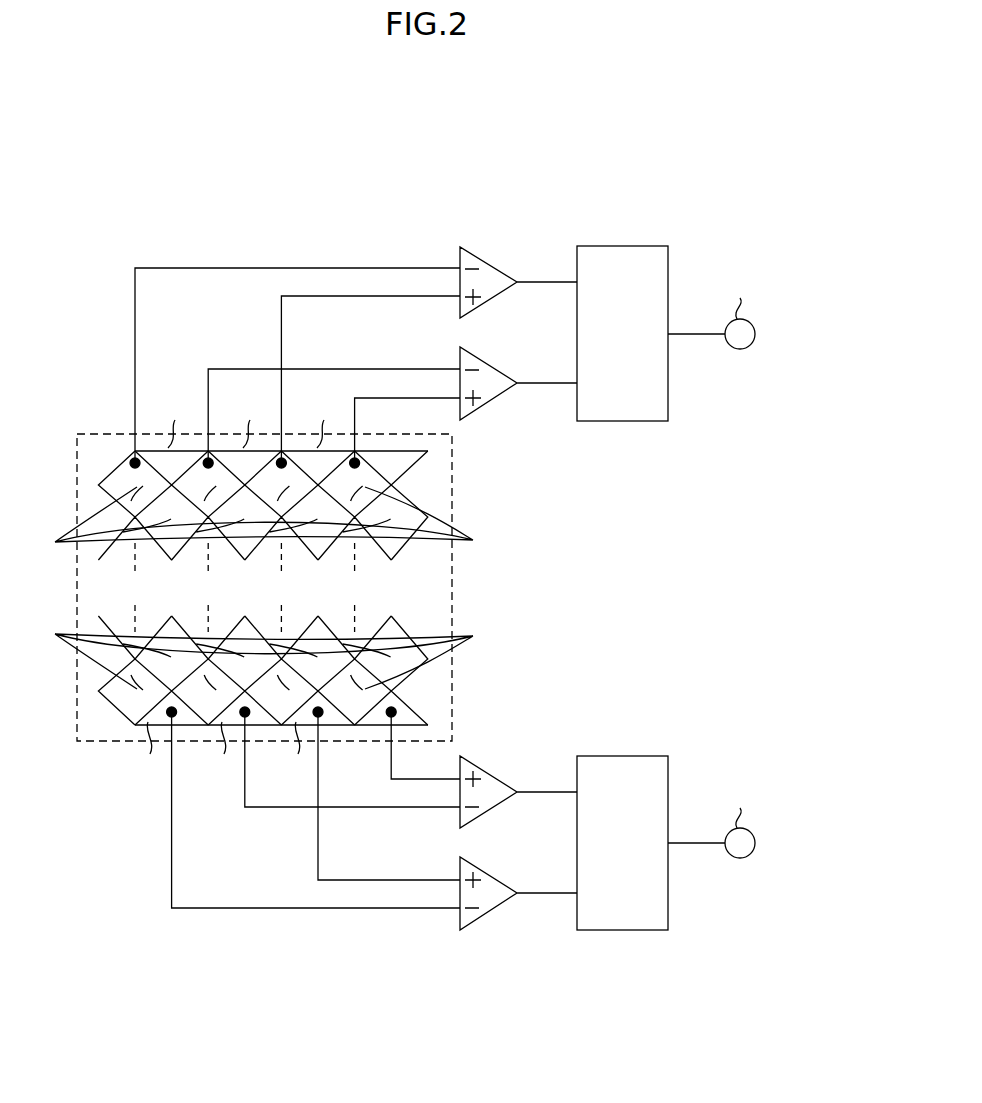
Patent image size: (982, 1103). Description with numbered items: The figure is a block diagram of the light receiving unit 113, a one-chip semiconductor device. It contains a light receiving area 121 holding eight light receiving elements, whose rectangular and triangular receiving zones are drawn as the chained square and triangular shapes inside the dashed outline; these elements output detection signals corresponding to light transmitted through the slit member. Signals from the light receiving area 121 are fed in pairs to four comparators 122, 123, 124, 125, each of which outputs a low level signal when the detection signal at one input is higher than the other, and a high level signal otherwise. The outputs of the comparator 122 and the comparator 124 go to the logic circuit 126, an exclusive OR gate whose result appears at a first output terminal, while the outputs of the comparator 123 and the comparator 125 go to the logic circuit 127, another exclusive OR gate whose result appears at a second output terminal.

The light receiving unit 113 is at (126, 197).
The light receiving area 121 is at (453, 597).
The comparator 122 is at (490, 262).
The comparator 123 is at (490, 874).
The comparator 124 is at (490, 364).
The comparator 125 is at (490, 772).
The logic circuit 126 is at (614, 246).
The logic circuit 127 is at (614, 756).